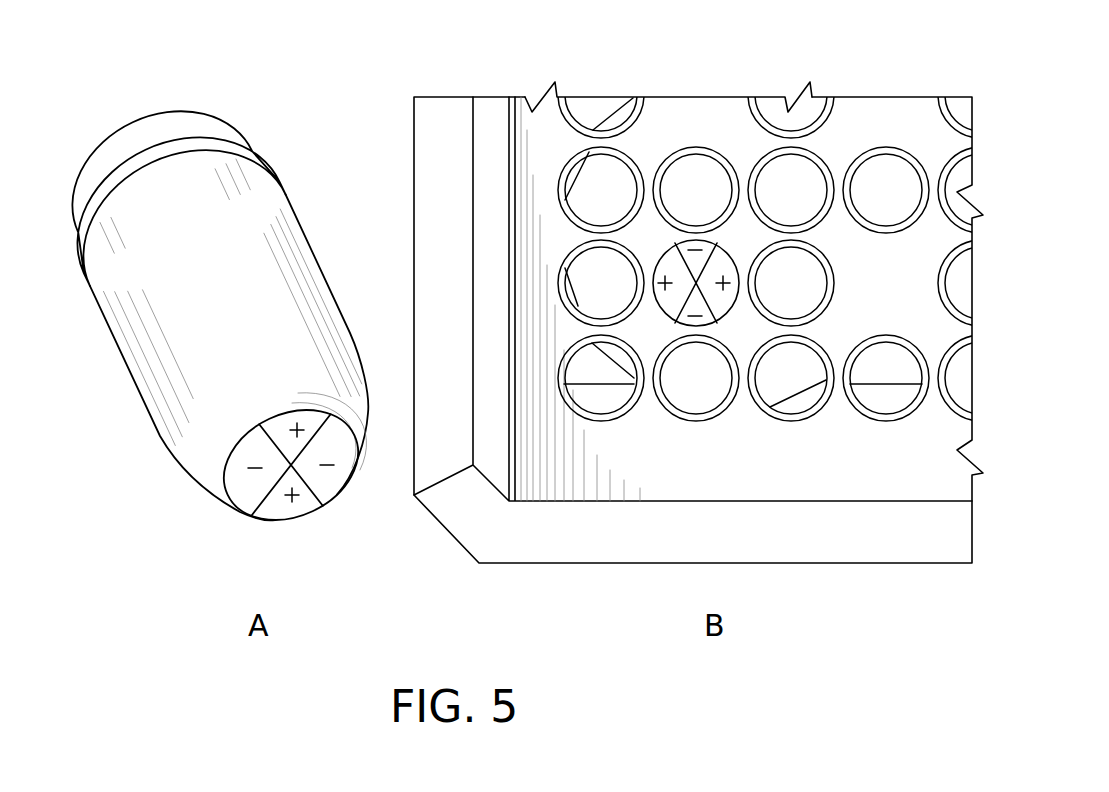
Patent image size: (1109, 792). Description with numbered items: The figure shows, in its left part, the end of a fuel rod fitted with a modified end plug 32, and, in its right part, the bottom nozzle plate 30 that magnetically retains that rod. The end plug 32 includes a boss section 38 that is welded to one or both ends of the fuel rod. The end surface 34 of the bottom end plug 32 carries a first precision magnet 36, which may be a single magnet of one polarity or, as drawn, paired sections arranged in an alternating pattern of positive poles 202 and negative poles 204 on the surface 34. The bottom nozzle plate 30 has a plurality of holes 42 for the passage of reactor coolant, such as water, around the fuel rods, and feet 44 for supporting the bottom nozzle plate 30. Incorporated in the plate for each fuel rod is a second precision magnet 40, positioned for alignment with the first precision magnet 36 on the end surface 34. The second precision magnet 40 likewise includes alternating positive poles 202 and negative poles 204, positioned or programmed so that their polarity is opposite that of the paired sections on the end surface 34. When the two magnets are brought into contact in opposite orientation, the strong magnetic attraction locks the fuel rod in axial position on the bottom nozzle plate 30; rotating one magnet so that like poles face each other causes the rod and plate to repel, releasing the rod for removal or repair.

The bottom nozzle plate 30 is at (507, 110).
The end plug 32 is at (281, 229).
The end surface 34 is at (313, 497).
The first precision magnet 36 is at (337, 430).
The boss section 38 is at (177, 118).
The second precision magnet 40 is at (788, 112).
The holes 42 is at (600, 263).
The feet 44 is at (903, 223).
The positive pole 202 is at (303, 413).
The negative pole 204 is at (240, 468).